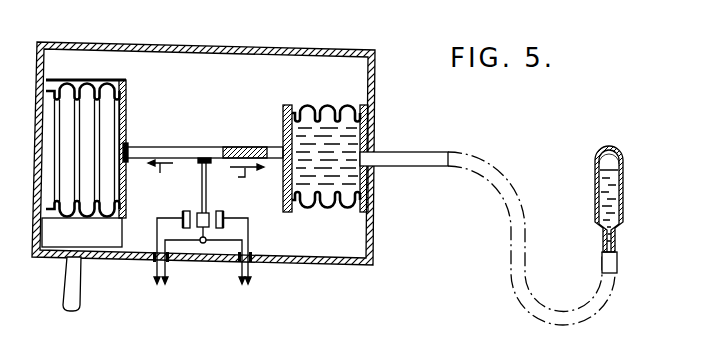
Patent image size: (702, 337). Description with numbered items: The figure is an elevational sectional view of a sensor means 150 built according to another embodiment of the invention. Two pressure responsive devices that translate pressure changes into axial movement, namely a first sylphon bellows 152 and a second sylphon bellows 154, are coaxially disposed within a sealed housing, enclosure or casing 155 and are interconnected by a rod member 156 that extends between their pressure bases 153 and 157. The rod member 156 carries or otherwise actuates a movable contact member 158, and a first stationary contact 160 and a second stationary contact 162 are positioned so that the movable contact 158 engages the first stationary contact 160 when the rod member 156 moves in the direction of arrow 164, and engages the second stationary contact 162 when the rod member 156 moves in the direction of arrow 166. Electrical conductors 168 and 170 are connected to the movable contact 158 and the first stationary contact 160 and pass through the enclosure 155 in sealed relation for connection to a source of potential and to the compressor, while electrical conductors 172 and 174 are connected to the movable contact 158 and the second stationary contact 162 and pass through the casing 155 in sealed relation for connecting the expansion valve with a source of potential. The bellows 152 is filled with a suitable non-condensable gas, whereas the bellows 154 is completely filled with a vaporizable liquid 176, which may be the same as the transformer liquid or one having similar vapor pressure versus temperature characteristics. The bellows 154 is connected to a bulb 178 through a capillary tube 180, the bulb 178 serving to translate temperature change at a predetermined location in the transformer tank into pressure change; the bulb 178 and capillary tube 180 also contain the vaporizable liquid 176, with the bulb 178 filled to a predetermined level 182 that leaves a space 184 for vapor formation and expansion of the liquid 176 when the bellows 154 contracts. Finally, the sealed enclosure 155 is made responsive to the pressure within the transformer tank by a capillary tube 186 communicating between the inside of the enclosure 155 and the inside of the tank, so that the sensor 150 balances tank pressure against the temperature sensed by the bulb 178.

The sensor means 150 is at (204, 33).
The sylphon bellows 152 is at (105, 150).
The pressure base 153 is at (126, 190).
The sylphon bellows 154 is at (301, 138).
The sealed housing 155 is at (333, 51).
The rod member 156 is at (179, 147).
The pressure base 157 is at (283, 188).
The movable contact member 158 is at (198, 213).
The first stationary contact 160 is at (183, 213).
The second stationary contact 162 is at (224, 214).
The arrow 164 is at (172, 174).
The arrow 166 is at (238, 176).
The electrical conductor 168 is at (165, 241).
The electrical conductor 170 is at (157, 226).
The electrical conductor 172 is at (242, 241).
The electrical conductor 174 is at (248, 226).
The vaporizable liquid 176 is at (286, 130).
The bulb 178 is at (609, 209).
The capillary tube 180 is at (432, 166).
The predetermined level 182 is at (618, 170).
The space 184 is at (601, 160).
The capillary tube 186 is at (66, 276).